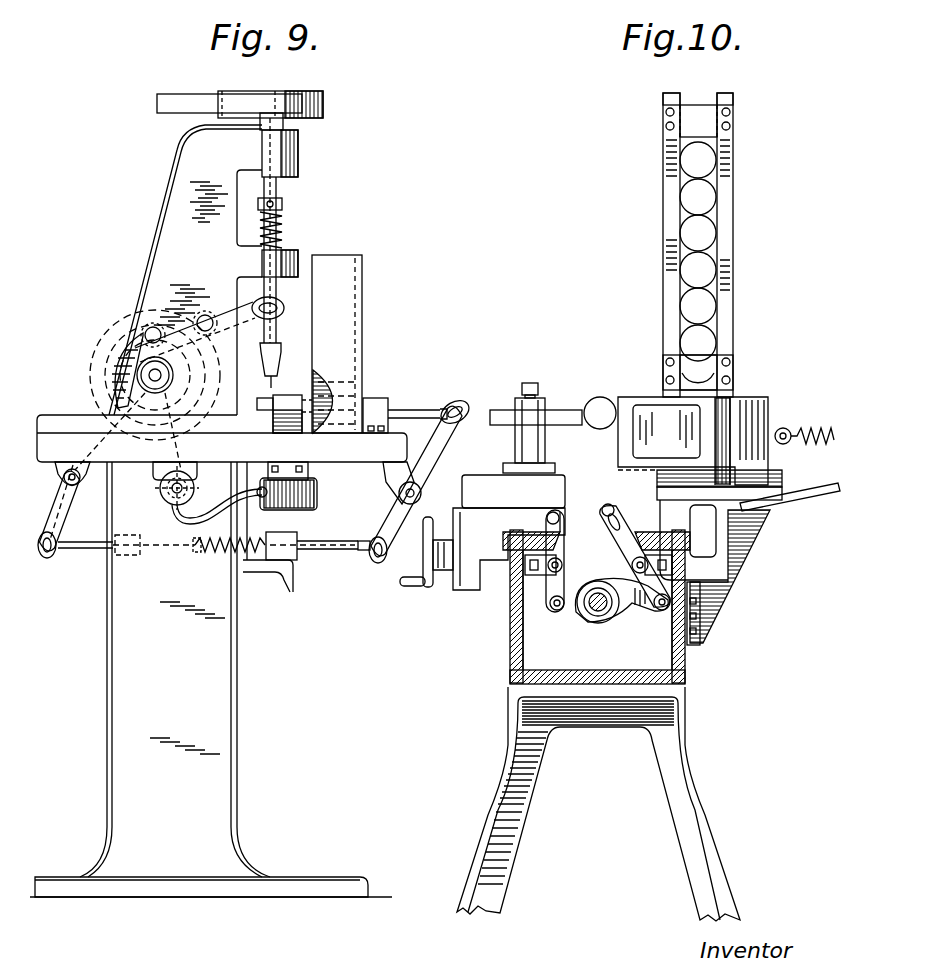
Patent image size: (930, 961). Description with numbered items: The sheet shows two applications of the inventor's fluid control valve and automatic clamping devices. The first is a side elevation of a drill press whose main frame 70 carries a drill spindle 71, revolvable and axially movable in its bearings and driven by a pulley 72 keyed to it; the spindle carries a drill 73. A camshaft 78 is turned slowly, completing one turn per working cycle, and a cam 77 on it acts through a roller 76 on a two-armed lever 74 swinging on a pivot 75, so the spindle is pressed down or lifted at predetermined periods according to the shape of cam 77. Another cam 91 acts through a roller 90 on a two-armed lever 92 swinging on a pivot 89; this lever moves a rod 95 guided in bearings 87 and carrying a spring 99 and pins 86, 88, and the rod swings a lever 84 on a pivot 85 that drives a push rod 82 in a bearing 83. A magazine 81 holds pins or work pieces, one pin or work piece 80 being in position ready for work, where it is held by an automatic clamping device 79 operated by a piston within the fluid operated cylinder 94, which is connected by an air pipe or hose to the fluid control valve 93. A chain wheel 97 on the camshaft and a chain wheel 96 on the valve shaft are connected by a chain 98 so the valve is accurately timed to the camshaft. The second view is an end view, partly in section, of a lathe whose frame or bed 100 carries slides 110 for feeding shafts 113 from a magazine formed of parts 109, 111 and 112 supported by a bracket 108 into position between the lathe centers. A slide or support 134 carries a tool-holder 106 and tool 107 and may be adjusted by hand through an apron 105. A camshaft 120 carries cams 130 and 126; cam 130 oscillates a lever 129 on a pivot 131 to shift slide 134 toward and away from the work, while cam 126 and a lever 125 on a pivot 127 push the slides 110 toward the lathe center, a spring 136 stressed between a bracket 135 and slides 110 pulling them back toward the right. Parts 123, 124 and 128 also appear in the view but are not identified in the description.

In FIG. 9, the main frame 70 is at (185, 206).
In FIG. 9, the drill spindle 71 is at (277, 203).
In FIG. 9, the pulley 72 is at (323, 118).
In FIG. 9, the drill 73 is at (284, 380).
In FIG. 9, the two-armed lever 74 is at (252, 303).
In FIG. 9, the pivot 75 is at (198, 318).
In FIG. 9, the roller 76 is at (145, 330).
In FIG. 9, the cam 77 is at (140, 367).
In FIG. 9, the camshaft 78 is at (112, 363).
In FIG. 9, the automatic clamping device 79 is at (292, 420).
In FIG. 9, the pin or work piece 80 is at (262, 409).
In FIG. 9, the magazine 81 is at (335, 345).
In FIG. 9, the push rod 82 is at (410, 406).
In FIG. 9, the bearing 83 is at (378, 398).
In FIG. 9, the lever 84 is at (458, 440).
In FIG. 9, the pivot 85 is at (400, 496).
In FIG. 9, the pin 86 is at (376, 562).
In FIG. 9, the bearings 87 is at (283, 572).
In FIG. 9, the pin 88 is at (50, 556).
In FIG. 9, the pivot 89 is at (76, 487).
In FIG. 9, the roller 90 is at (106, 378).
In FIG. 9, the cam 91 is at (100, 396).
In FIG. 9, the two-armed lever 92 is at (60, 494).
In FIG. 9, the fluid control valve 93 is at (165, 498).
In FIG. 9, the fluid operated cylinder 94 is at (300, 509).
In FIG. 9, the rod 95 is at (190, 553).
In FIG. 9, the chain wheel 96 is at (190, 494).
In FIG. 9, the chain wheel 97 is at (178, 375).
In FIG. 9, the chain 98 is at (185, 449).
In FIG. 9, the spring 99 is at (272, 536).
In FIG. 10, the frame or bed 100 is at (686, 665).
In FIG. 10, the apron 105 is at (458, 580).
In FIG. 10, the tool-holder 106 is at (518, 446).
In FIG. 10, the tool 107 is at (555, 410).
In FIG. 10, the bracket 108 is at (723, 500).
In FIG. 10, the magazine part 109 is at (727, 330).
In FIG. 10, the slides 110 is at (690, 432).
In FIG. 10, the magazine part 111 is at (665, 220).
In FIG. 10, the magazine part 112 is at (733, 370).
In FIG. 10, the shafts 113 is at (593, 405).
In FIG. 10, the camshaft 120 is at (590, 614).
In FIG. 10, the pivot slot 123 is at (613, 516).
In FIG. 10, the plate 124 is at (657, 503).
In FIG. 10, the lever 125 is at (710, 585).
In FIG. 10, the cam 126 is at (640, 616).
In FIG. 10, the pivot 127 is at (630, 561).
In FIG. 10, the body 128 is at (462, 572).
In FIG. 10, the lever 129 is at (552, 616).
In FIG. 10, the cam 130 is at (545, 632).
In FIG. 10, the pivot 131 is at (548, 582).
In FIG. 10, the slide or support 134 is at (486, 482).
In FIG. 10, the bracket 135 is at (818, 497).
In FIG. 10, the spring 136 is at (833, 436).